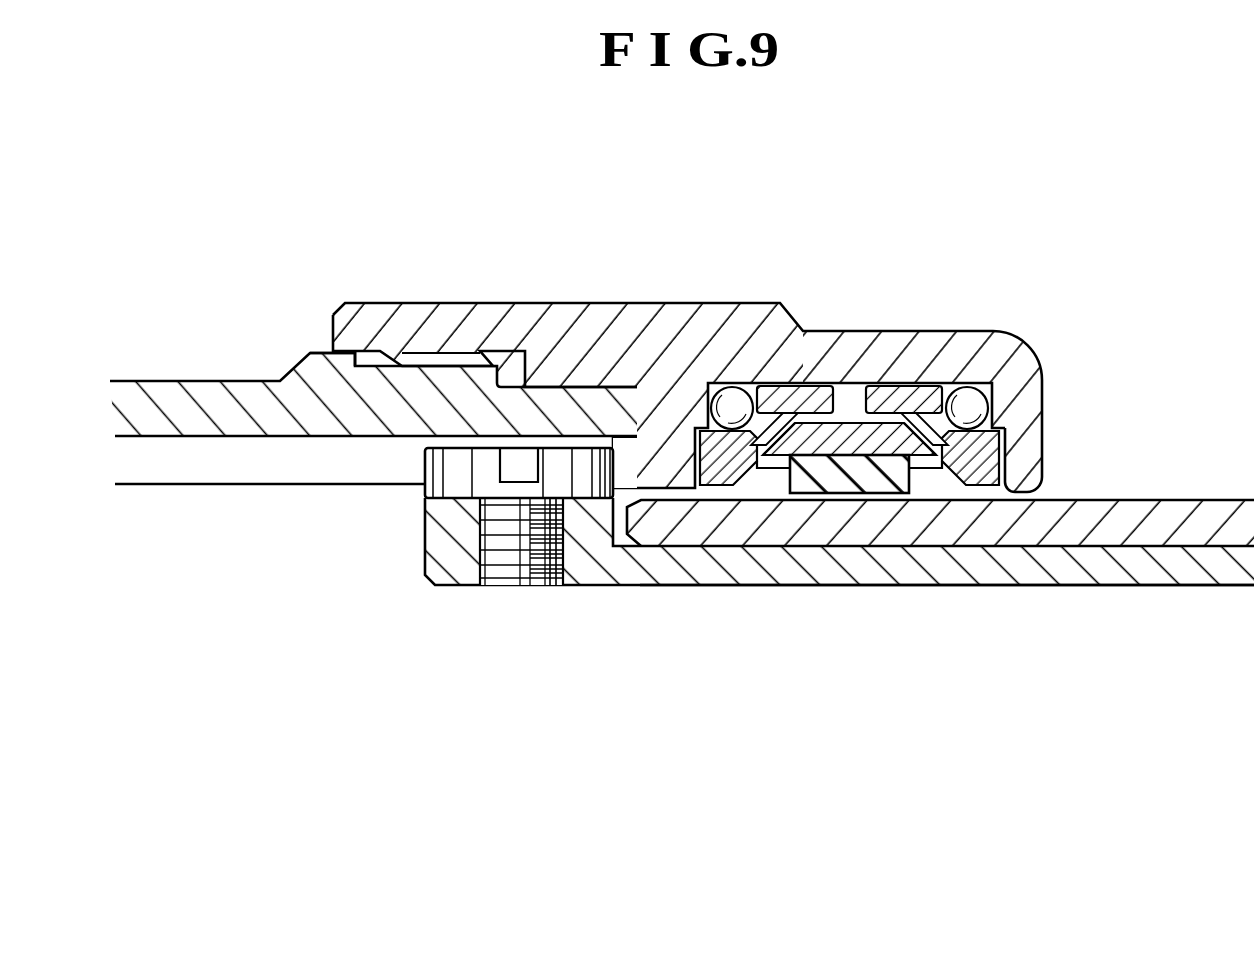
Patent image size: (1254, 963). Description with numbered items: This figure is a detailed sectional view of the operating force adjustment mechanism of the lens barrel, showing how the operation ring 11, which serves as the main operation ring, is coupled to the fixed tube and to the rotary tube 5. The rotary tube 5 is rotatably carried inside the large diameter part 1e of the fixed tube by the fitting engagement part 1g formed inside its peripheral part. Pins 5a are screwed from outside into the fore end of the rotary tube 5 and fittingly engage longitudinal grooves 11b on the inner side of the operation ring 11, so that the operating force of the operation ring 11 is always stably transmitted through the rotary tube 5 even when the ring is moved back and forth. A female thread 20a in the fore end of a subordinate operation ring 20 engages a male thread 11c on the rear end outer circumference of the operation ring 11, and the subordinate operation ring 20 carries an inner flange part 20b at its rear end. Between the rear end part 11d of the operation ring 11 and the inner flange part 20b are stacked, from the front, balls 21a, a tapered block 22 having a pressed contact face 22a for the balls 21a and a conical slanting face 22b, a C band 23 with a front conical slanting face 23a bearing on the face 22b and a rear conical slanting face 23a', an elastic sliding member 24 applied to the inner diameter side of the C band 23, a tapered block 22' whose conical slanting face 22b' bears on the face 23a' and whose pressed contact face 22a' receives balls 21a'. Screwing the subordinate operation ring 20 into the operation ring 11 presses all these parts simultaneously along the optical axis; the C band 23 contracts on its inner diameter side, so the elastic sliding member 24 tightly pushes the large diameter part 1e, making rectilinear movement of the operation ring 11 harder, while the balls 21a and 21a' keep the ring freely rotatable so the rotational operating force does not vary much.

The operation ring 11 is at (182, 407).
The longitudinal grooves 11b is at (273, 468).
The male thread 11c is at (432, 357).
The rear end part of the operation ring 11d is at (698, 405).
The subordinate operation ring 20 is at (578, 340).
The female thread 20a is at (483, 352).
The inner flange part 20b is at (1020, 450).
The balls 21a is at (721, 331).
The balls 21a' is at (994, 331).
The tapered block 22 is at (749, 359).
The tapered block 22' is at (950, 359).
The pressed contact face 22a is at (755, 331).
The pressed contact face 22a' is at (961, 331).
The conical slanting face 22b is at (795, 304).
The conical slanting face 22b' is at (905, 304).
The C band 23 is at (852, 421).
The conical slanting face 23a is at (805, 344).
The conical slanting face 23a' is at (900, 344).
The elastic sliding member 24 is at (832, 478).
The rotary tube 5 is at (1106, 563).
The pins 5a is at (462, 482).
The large diameter part 1e is at (1178, 522).
The fitting engagement part 1g is at (1232, 548).